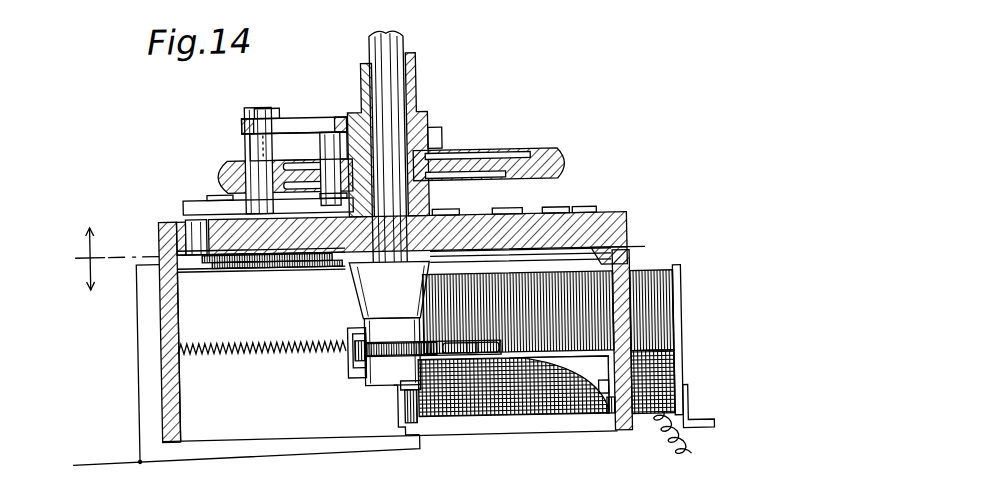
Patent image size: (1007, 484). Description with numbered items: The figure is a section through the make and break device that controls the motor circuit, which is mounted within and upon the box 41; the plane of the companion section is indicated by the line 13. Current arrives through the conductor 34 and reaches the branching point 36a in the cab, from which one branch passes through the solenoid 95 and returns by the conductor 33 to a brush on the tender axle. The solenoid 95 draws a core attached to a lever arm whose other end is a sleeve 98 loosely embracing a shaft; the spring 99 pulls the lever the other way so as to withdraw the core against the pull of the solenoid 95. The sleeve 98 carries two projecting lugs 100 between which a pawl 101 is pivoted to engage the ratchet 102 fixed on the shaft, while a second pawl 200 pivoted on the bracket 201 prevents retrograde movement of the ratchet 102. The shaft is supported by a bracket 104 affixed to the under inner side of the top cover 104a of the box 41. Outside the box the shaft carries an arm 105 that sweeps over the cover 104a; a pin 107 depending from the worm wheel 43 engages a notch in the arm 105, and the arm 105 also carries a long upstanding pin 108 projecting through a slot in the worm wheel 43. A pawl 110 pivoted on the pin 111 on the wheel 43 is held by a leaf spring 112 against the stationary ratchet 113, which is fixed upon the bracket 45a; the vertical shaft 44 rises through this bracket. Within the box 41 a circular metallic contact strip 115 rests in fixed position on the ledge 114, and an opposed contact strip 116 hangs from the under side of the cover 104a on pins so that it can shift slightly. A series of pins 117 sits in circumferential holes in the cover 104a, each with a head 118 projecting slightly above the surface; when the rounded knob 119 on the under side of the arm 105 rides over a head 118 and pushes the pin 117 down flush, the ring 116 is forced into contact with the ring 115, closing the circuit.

The section line 13 is at (94, 259).
The conductor 33 is at (659, 436).
The conductor 34 is at (237, 451).
The branching point 36a is at (144, 374).
The box 41 is at (387, 328).
The worm wheel 43 is at (573, 166).
The shaft 44 is at (407, 48).
The bracket 45a is at (419, 84).
The solenoid 95 is at (656, 343).
The sleeve 98 is at (433, 360).
The spring 99 is at (257, 357).
The projecting lugs 100 is at (351, 371).
The pawl 101 is at (348, 332).
The ratchet 102 is at (392, 352).
The bracket 104 is at (389, 290).
The top cover 104a is at (613, 232).
The arm 105 is at (194, 203).
The pin 107 is at (235, 155).
The upstanding pin 108 is at (331, 134).
The pawl 110 is at (299, 146).
The pin 111 is at (264, 107).
The leaf spring 112 is at (306, 118).
The ratchet 113 is at (446, 134).
The ledge 114 is at (227, 274).
The contact strip 115 is at (263, 269).
The contact strip 116 is at (308, 265).
The pins 117 is at (201, 241).
The head 118 is at (184, 218).
The rounded knob 119 is at (162, 217).
The pawl 200 is at (426, 349).
The bracket 201 is at (605, 406).